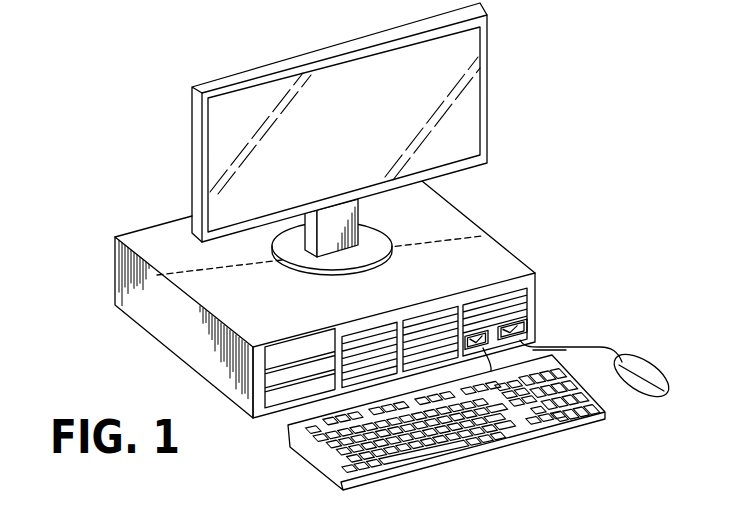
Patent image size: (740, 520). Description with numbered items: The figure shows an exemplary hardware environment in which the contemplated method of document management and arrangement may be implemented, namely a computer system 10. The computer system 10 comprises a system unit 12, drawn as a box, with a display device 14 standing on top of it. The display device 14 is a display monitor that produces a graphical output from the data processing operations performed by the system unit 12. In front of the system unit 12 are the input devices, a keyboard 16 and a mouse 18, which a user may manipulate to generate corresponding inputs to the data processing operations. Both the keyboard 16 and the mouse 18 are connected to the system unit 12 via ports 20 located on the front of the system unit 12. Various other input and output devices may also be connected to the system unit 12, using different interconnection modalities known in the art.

The computer system 10 is at (98, 114).
The system unit 12 is at (355, 332).
The display device 14 is at (357, 134).
The keyboard 16 is at (553, 428).
The mouse 18 is at (661, 373).
The ports 20 is at (487, 330).